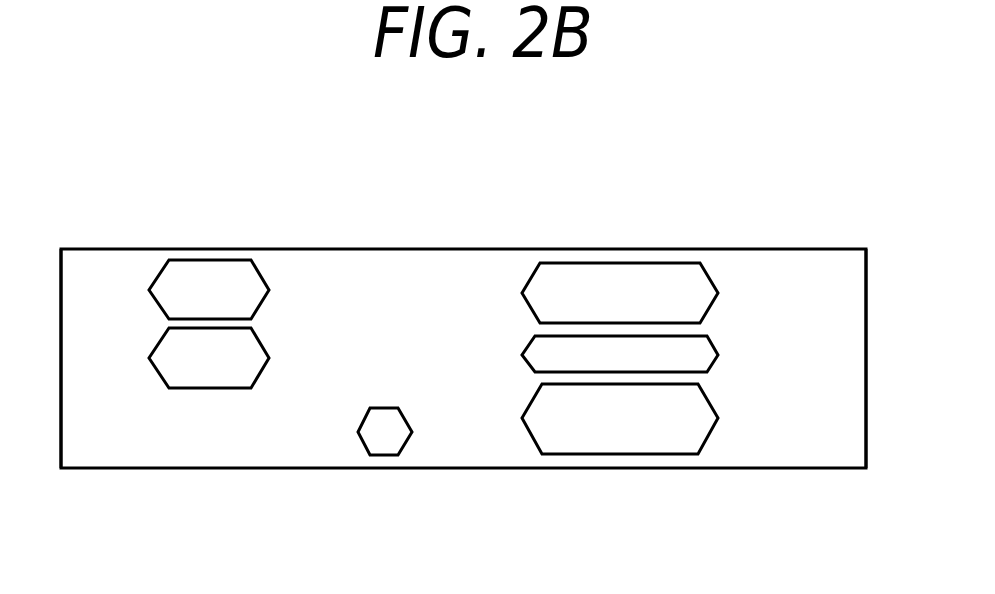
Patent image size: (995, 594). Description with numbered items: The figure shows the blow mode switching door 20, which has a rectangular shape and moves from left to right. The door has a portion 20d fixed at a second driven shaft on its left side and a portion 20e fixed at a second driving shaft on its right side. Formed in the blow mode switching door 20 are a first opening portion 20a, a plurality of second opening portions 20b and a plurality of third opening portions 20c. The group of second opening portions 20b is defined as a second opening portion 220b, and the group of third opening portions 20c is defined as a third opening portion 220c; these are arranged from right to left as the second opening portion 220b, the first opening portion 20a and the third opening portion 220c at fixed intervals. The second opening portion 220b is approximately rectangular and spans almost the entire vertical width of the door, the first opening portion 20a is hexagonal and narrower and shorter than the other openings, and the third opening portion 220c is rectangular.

The blow mode switching door 20 is at (232, 450).
The first opening portion 20a is at (383, 443).
The second opening portions 20b is at (563, 285).
The third opening portions 20c is at (194, 280).
The portion fixed at the second driven shaft 20d is at (68, 423).
The portion fixed at the second driving shaft 20e is at (850, 408).
The second opening portion 220b is at (515, 186).
The third opening portion 220c is at (155, 187).